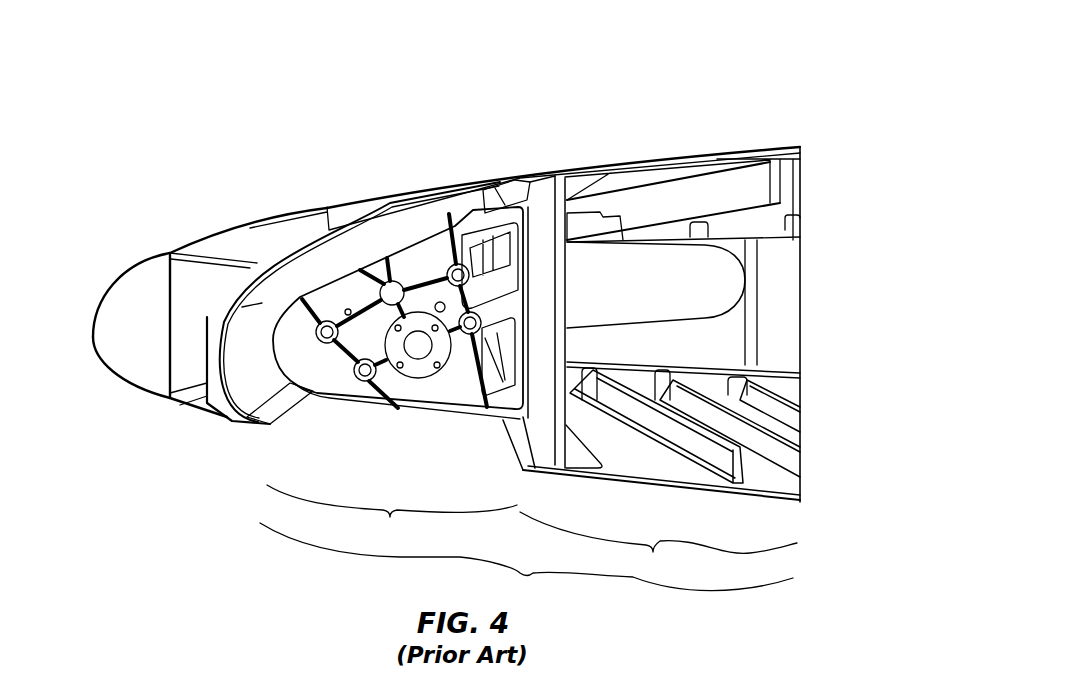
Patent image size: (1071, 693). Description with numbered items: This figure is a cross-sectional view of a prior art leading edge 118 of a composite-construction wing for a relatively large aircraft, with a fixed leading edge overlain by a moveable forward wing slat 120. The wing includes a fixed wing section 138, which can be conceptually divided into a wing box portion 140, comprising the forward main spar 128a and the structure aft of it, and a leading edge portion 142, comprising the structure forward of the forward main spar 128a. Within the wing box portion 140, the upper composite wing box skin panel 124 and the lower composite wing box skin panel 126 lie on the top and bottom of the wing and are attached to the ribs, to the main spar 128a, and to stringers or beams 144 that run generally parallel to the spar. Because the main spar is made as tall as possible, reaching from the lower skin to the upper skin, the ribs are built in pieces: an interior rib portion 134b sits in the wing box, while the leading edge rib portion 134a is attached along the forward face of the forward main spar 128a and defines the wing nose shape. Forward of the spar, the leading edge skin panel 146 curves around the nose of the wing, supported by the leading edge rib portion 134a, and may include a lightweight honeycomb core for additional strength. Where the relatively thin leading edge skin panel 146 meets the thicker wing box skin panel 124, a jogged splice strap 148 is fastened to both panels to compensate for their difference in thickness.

The leading edge 118 is at (160, 224).
The moveable forward wing slat 120 is at (257, 218).
The upper composite wing box skin panel 124 is at (660, 162).
The lower composite wing box skin panel 126 is at (633, 487).
The forward main spar 128a is at (547, 413).
The leading edge rib portion 134a is at (378, 392).
The interior rib portion 134b is at (723, 328).
The fixed wing section 138 is at (526, 561).
The wing box portion 140 is at (658, 541).
The leading edge portion 142 is at (392, 513).
The stringers or beams 144 is at (787, 212).
The leading edge skin panel 146 is at (368, 218).
The splice strap 148 is at (507, 172).